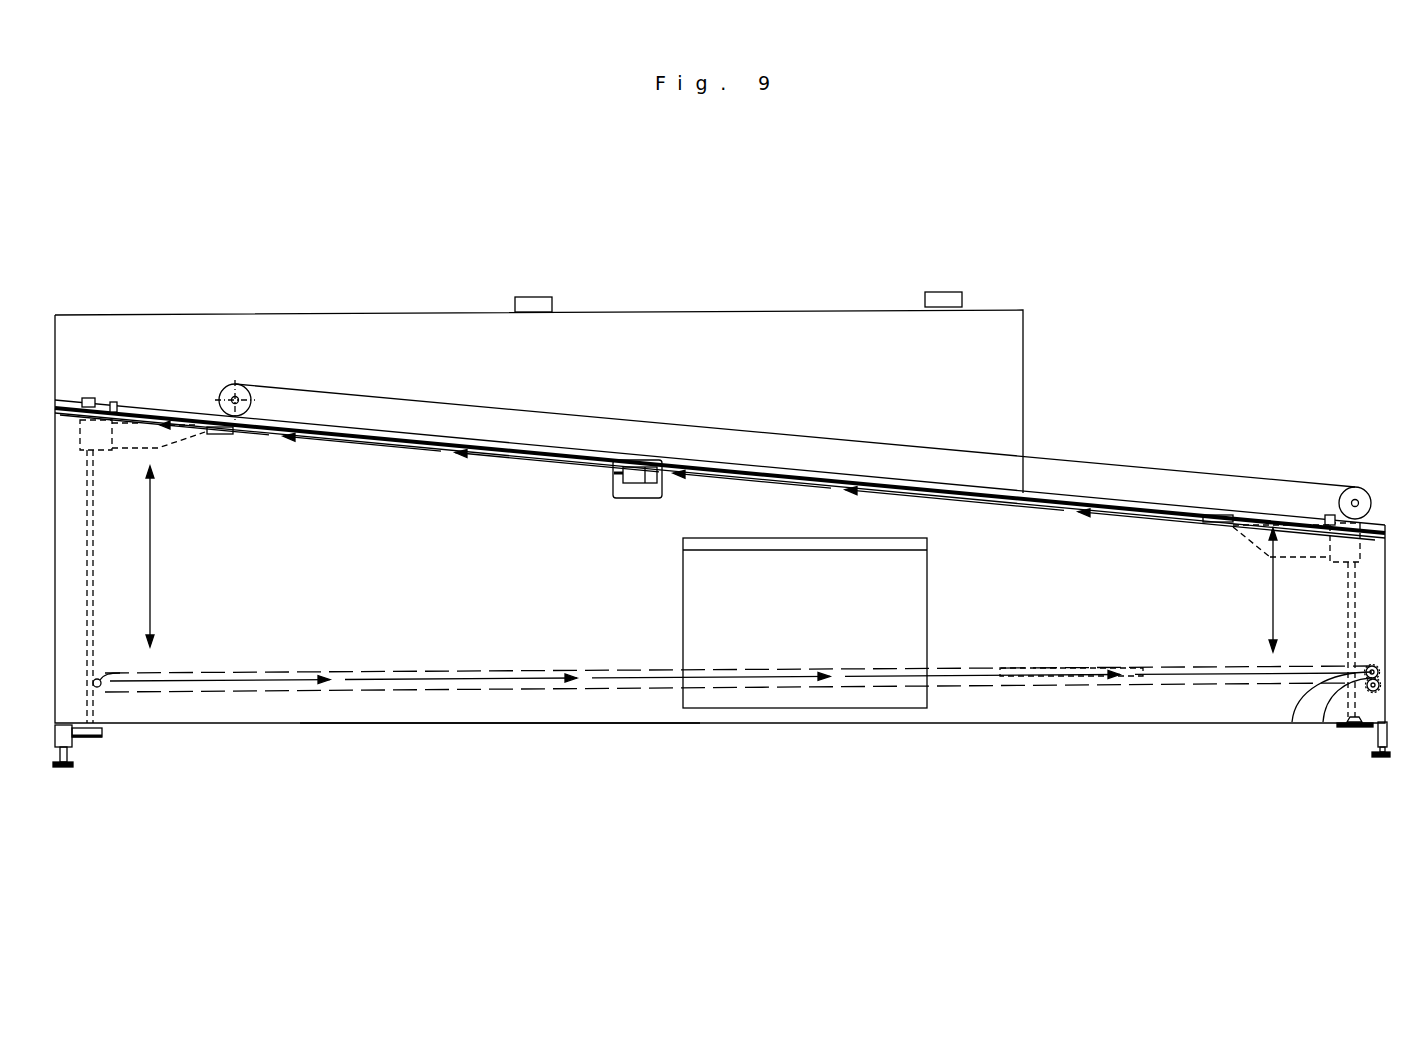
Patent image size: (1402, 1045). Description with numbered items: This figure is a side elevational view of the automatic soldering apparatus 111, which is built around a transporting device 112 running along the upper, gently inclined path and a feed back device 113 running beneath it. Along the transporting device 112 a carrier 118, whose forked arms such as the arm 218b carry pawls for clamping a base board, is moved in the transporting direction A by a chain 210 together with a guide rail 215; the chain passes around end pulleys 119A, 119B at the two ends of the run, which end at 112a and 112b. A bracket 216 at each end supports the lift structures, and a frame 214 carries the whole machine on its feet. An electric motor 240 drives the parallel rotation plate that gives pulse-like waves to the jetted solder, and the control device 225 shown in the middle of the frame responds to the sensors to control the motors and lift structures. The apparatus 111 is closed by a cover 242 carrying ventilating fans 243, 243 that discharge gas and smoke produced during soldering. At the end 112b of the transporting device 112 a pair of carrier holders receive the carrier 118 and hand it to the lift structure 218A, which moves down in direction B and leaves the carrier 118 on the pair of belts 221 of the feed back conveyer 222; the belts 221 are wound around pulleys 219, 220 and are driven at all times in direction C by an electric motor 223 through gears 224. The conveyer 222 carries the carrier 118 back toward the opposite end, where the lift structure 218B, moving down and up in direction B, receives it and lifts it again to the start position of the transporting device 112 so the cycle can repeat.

The automatic soldering apparatus 111 is at (1124, 242).
The transporting device 112 is at (1209, 468).
The downstream end of belt conveyor 112a is at (1300, 497).
The end of the base board transporting device 112b is at (152, 400).
The feed back device 113 is at (497, 700).
The carrier 118 is at (1085, 667).
The drive pulley 119A is at (1345, 488).
The driven pulley 119B is at (250, 386).
The chain 210 is at (1150, 470).
The frame 214 is at (1045, 723).
The guide rail 215 is at (1083, 495).
The support member 216 is at (112, 580).
The lift structure 218A is at (160, 448).
The lift structure 218B is at (1300, 562).
The arm 218b is at (220, 435).
The pulley 219 is at (108, 688).
The pulley 220 is at (1295, 740).
The belt 221 is at (1165, 688).
The conveyer 222 is at (590, 690).
The electric motor 223 is at (1368, 735).
The gear 224 is at (1317, 730).
The control device 225 is at (883, 708).
The electric motor 240 is at (635, 485).
The cover 242 is at (810, 310).
The ventilating fan 243 is at (535, 297).